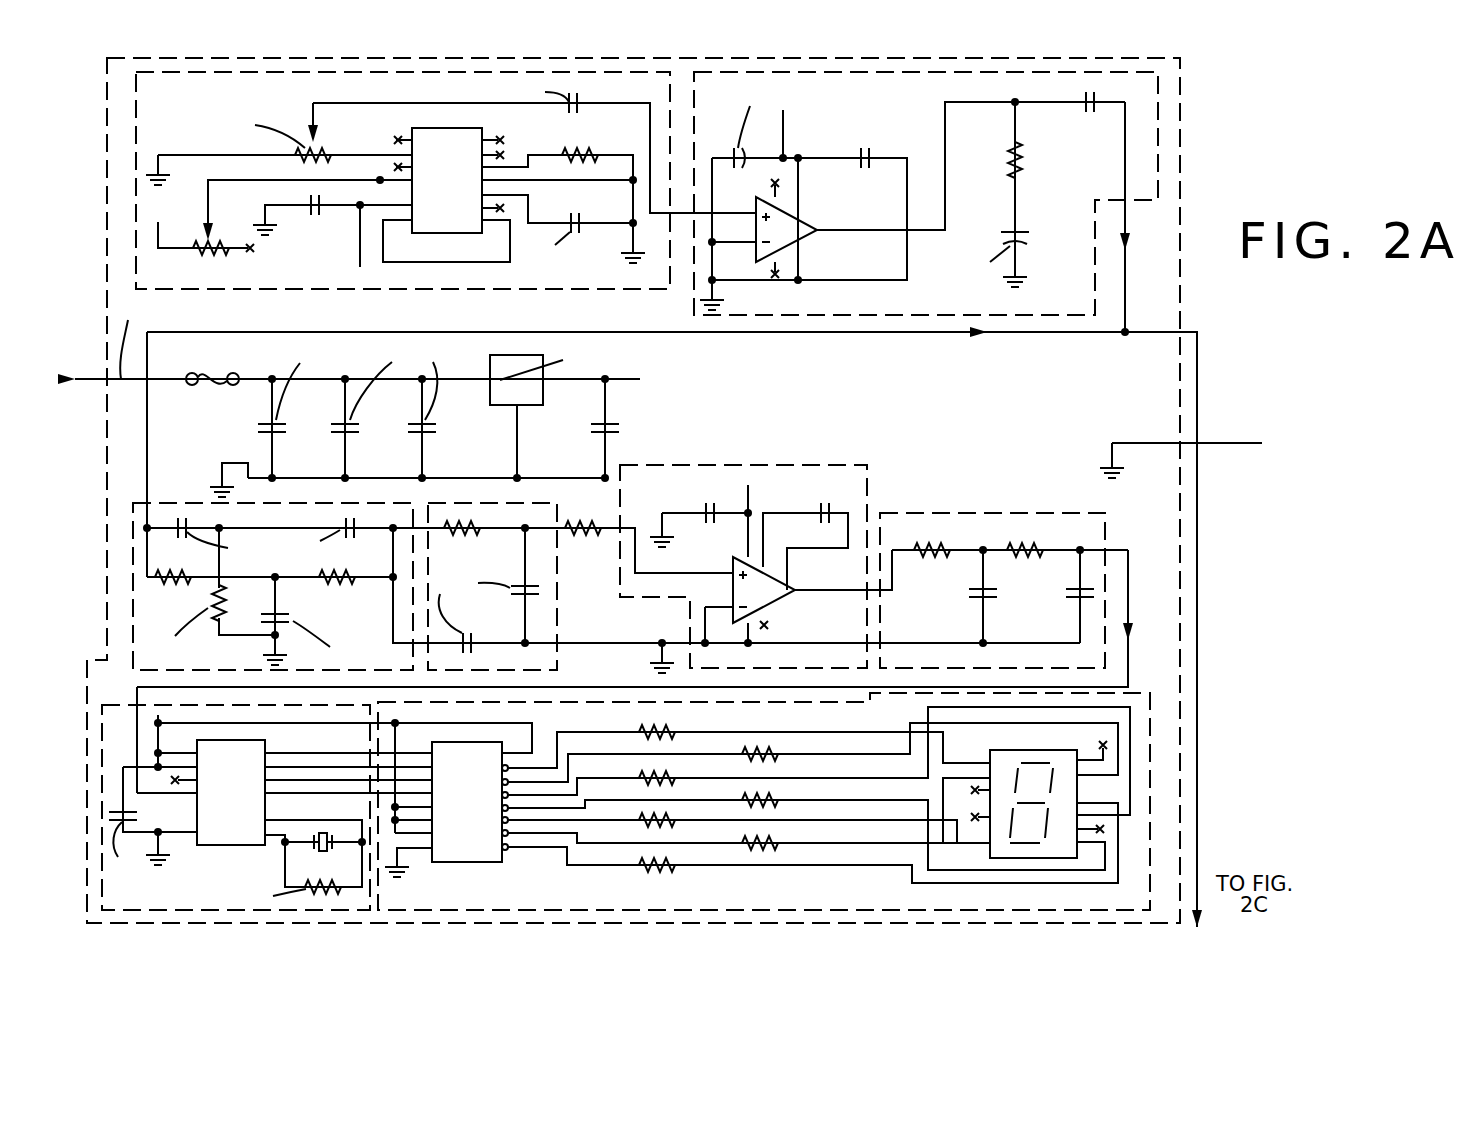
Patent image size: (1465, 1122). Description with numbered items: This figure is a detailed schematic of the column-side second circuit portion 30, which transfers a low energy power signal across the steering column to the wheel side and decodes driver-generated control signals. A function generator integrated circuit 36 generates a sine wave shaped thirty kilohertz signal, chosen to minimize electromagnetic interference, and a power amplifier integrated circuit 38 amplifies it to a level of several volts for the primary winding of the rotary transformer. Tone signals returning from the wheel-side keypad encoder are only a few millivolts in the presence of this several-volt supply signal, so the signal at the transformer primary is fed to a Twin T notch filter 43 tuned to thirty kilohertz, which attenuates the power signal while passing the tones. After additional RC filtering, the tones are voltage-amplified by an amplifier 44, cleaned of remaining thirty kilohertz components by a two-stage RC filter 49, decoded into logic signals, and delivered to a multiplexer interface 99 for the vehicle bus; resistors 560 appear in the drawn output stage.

The second circuit portion 30 is at (1182, 118).
The function generator integrated circuit 36 is at (550, 295).
The power amplifier integrated circuit 38 is at (690, 297).
The Twin T notch filter 43 is at (150, 448).
The amplifier 44 is at (815, 458).
The two-stage RC filter 49 is at (943, 507).
The multiplexer interface 99 is at (626, 824).
The 560 ohm resistors 560 is at (672, 848).